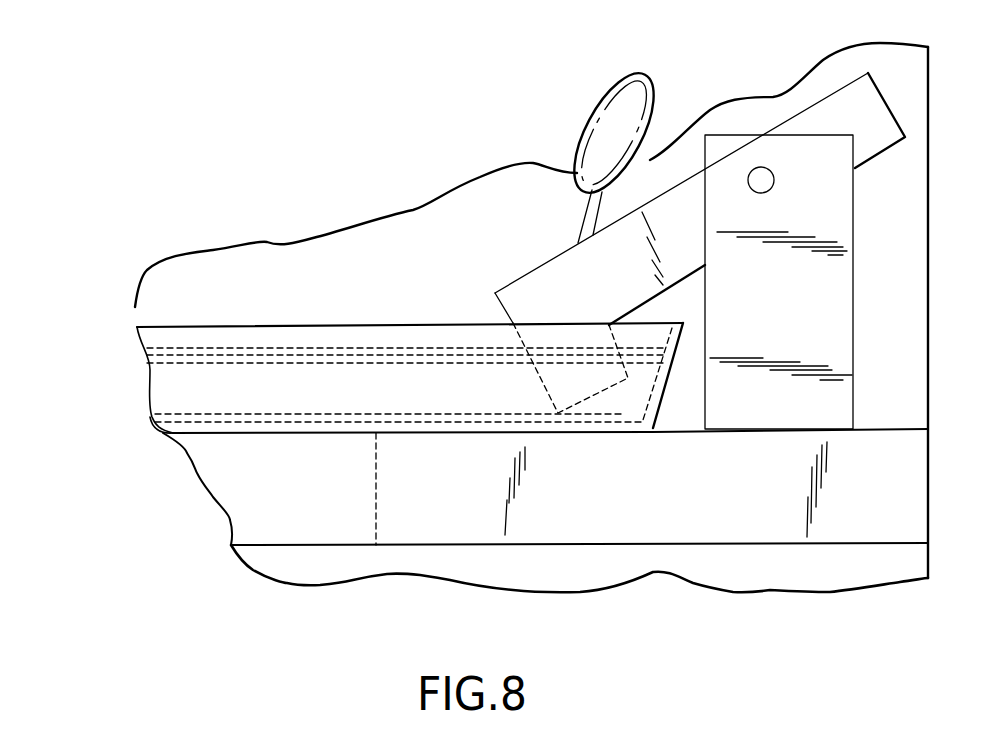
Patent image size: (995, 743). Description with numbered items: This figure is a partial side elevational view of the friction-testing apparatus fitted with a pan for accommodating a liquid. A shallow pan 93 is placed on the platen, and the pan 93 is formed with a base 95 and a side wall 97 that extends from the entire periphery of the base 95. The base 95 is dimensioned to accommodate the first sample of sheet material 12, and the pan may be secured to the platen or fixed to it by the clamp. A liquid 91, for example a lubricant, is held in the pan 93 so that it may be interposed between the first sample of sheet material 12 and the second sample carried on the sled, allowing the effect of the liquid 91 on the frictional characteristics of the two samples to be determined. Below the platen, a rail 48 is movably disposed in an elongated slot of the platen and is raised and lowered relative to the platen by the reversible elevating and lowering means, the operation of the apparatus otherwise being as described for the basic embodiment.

The first sample of sheet material 12 is at (330, 417).
The shallow pan 93 is at (226, 312).
The liquid 91 is at (163, 397).
The base 95 is at (176, 428).
The side wall 97 is at (667, 387).
The rail 48 is at (238, 495).